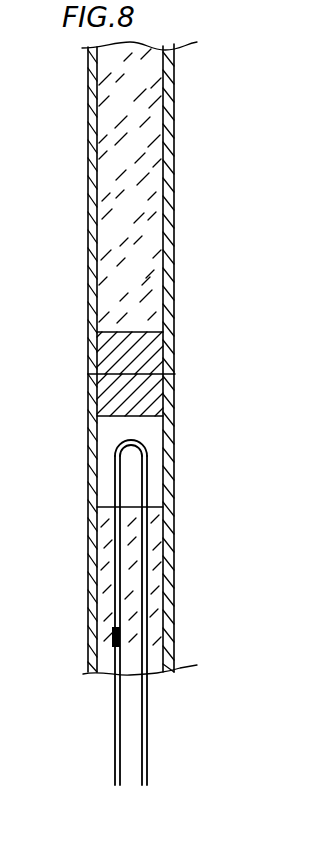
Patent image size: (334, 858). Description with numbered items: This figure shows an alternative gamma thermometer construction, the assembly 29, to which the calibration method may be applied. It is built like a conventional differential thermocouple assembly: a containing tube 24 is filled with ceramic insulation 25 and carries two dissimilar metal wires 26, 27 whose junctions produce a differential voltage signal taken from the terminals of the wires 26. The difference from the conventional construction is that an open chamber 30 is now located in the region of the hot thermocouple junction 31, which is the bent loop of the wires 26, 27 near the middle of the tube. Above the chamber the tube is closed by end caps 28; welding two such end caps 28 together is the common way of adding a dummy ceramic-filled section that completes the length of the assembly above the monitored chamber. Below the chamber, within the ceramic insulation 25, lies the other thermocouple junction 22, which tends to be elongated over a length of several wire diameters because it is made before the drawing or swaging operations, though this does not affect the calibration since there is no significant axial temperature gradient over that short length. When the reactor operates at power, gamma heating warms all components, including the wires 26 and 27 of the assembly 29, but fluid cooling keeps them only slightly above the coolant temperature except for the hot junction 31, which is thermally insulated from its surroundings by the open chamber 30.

The thermocouple junction 22 is at (111, 637).
The containing tube 24 is at (90, 247).
The ceramic insulation 25 is at (132, 158).
The dissimilar metal wire 26 is at (114, 758).
The dissimilar metal wire 27 is at (104, 587).
The end cap 28 is at (158, 358).
The assembly 29 is at (157, 679).
The open chamber 30 is at (145, 435).
The hot thermocouple junction 31 is at (118, 442).